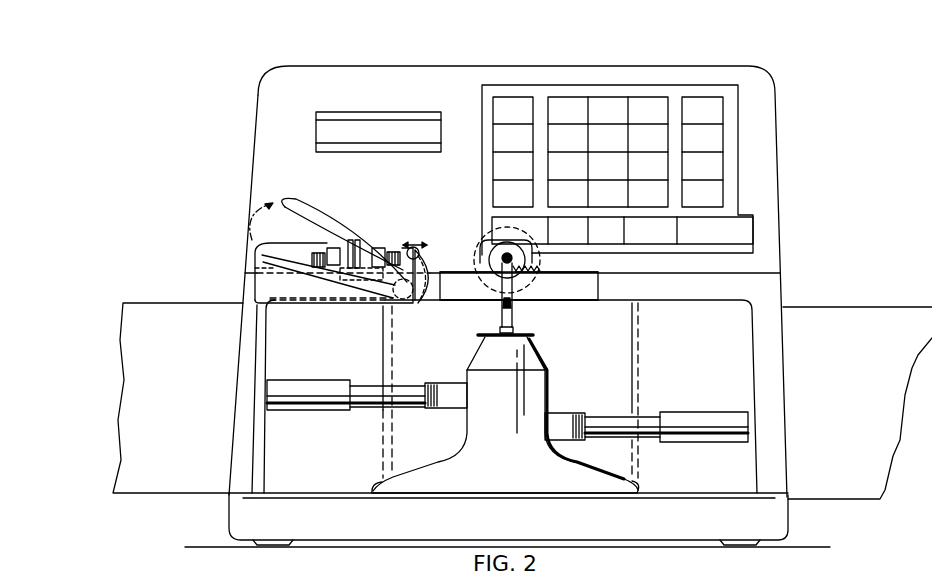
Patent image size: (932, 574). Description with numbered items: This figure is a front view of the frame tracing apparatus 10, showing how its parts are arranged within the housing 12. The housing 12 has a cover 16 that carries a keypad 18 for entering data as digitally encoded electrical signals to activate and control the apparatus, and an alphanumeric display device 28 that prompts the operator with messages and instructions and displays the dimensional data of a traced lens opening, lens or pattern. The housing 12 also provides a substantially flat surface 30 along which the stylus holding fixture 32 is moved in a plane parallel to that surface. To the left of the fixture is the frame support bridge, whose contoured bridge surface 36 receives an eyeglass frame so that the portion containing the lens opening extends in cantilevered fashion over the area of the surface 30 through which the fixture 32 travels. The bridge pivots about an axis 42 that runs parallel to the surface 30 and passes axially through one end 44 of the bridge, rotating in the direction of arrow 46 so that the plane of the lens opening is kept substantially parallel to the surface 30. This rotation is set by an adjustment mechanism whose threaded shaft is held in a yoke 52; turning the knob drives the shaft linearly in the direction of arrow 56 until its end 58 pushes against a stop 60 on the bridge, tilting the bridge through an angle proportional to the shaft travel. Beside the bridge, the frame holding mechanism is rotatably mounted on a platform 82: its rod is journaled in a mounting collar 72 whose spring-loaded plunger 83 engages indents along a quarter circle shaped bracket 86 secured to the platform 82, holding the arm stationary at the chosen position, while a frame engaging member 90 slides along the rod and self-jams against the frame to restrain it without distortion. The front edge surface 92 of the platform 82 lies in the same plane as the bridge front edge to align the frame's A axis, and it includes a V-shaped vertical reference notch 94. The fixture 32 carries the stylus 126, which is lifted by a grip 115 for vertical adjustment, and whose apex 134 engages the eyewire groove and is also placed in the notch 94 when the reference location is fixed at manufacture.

The frame tracing apparatus 10 is at (686, 48).
The housing 12 is at (764, 297).
The cover 16 is at (781, 232).
The keypad 18 is at (478, 102).
The alphanumeric display device 28 is at (316, 118).
The flat surface 30 is at (679, 494).
The stylus holding fixture 32 is at (549, 392).
The bridge surface 36 is at (316, 212).
The pivot axis 42 is at (400, 300).
The bridge end 44 is at (420, 303).
The bridge rotation arrow 46 is at (261, 212).
The yoke 52 is at (379, 247).
The shaft movement arrow 56 is at (414, 247).
The shaft end 58 is at (394, 252).
The stop 60 is at (426, 251).
The mounting collar 72 is at (484, 241).
The platform 82 is at (602, 287).
The spring-loaded plunger 83 is at (500, 258).
The quarter circle shaped bracket 86 is at (584, 265).
The frame engaging member 90 is at (533, 290).
The front edge surface 92 is at (577, 288).
The V-shaped vertical reference notch 94 is at (484, 285).
The grip 115 is at (483, 334).
The stylus 126 is at (511, 333).
The apex 134 is at (503, 305).